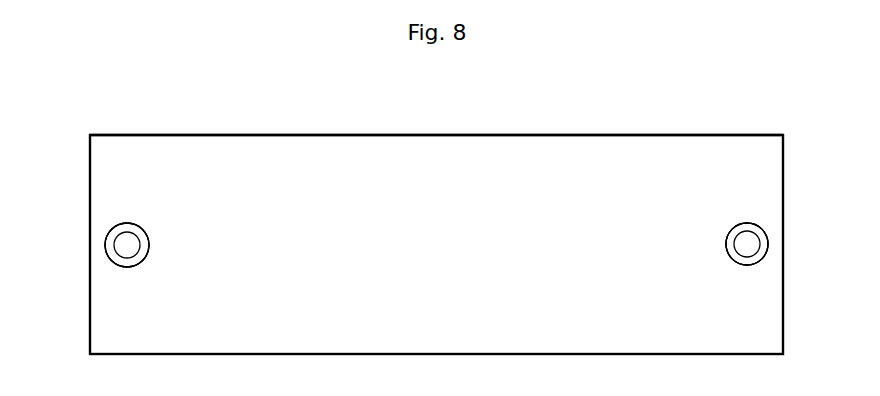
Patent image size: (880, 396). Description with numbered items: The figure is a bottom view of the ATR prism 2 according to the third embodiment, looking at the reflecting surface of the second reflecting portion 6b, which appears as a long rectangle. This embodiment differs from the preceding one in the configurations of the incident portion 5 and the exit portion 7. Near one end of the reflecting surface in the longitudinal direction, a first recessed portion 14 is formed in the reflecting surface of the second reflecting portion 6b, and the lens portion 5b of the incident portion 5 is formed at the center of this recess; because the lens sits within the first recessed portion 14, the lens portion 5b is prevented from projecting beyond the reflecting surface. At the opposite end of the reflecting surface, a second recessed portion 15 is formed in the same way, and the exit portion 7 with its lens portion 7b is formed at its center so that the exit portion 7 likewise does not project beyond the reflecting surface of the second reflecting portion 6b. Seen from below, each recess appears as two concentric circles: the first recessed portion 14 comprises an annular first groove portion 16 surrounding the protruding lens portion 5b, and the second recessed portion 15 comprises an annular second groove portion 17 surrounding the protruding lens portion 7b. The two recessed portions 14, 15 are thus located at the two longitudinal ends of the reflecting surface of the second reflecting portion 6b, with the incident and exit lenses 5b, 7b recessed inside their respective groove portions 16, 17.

The ATR prism 2 is at (500, 134).
The second reflecting portion 6b is at (372, 163).
The incident portion 5 is at (148, 238).
The lens portion 5b is at (122, 247).
The first recessed portion 14 is at (134, 212).
The first groove portion 16 is at (130, 263).
The exit portion 7 is at (729, 240).
The lens portion 7b is at (750, 244).
The second recessed portion 15 is at (741, 213).
The second groove portion 17 is at (738, 262).